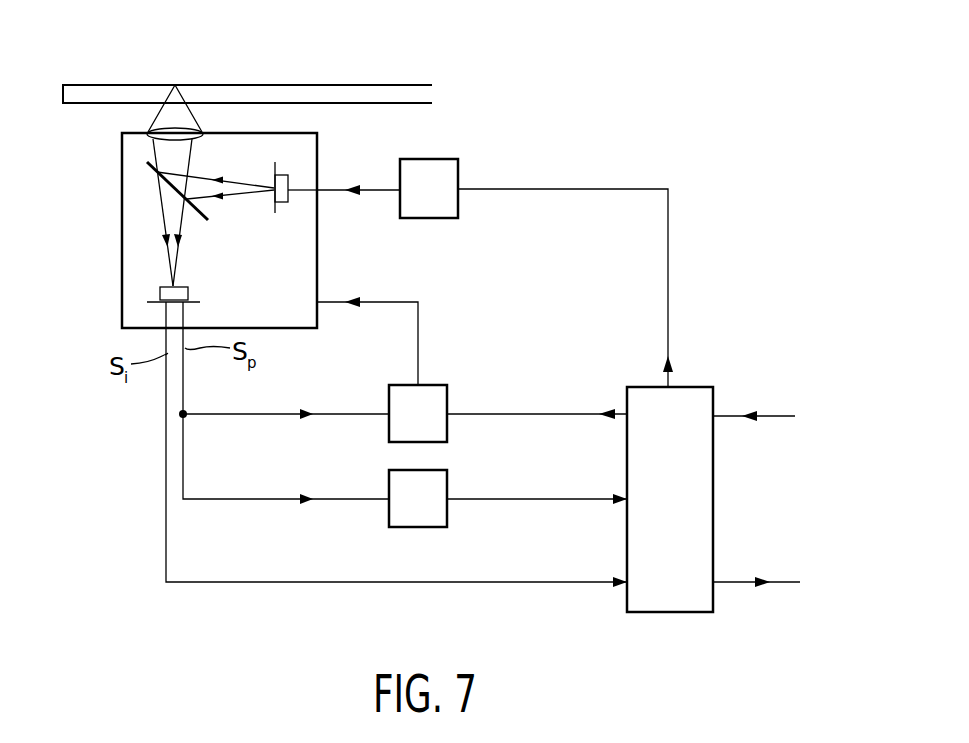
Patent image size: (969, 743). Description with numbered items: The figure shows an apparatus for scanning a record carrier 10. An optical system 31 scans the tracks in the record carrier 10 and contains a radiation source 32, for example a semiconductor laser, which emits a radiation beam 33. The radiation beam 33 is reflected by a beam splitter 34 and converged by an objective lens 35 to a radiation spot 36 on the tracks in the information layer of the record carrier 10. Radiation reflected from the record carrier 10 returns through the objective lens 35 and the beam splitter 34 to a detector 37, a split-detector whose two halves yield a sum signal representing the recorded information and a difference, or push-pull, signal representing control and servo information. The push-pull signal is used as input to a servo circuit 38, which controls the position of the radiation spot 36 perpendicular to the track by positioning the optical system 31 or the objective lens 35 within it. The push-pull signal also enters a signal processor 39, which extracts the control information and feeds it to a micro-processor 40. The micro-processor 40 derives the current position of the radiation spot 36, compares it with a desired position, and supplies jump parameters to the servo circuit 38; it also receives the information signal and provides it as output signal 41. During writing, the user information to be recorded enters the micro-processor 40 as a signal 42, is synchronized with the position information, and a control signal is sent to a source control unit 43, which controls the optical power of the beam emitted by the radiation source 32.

The record carrier 10 is at (92, 85).
The optical system 31 is at (121, 193).
The radiation source 32 is at (287, 205).
The radiation beam 33 is at (245, 197).
The beam splitter 34 is at (207, 223).
The objective lens 35 is at (203, 133).
The radiation spot 36 is at (175, 84).
The detector 37 is at (190, 296).
The servo circuit 38 is at (437, 398).
The signal processor 39 is at (435, 481).
The micro-processor 40 is at (692, 395).
The output signal 41 is at (778, 580).
The signal 42 is at (772, 418).
The source control unit 43 is at (450, 170).